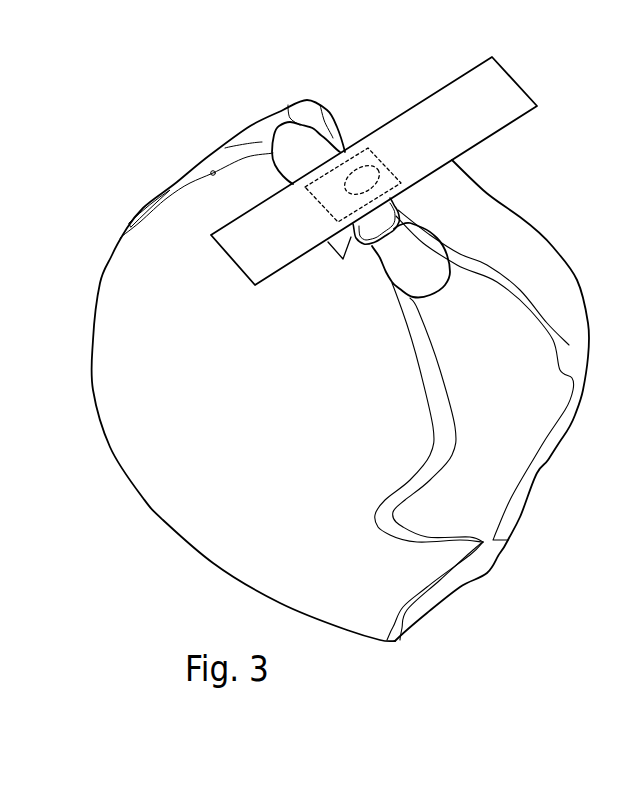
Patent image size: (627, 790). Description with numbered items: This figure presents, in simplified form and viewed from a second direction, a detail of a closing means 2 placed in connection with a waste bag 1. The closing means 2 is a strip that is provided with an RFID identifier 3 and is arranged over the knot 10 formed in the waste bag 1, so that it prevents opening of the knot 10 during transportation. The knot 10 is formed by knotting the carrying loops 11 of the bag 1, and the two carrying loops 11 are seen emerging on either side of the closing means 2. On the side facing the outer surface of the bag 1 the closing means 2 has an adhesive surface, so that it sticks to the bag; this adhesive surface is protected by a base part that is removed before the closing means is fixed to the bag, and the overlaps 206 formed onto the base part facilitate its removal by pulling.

The waste bag 1 is at (133, 270).
The closing means 2 is at (468, 91).
The RFID identifier 3 is at (365, 168).
The knot 10 is at (400, 208).
The carrying loops 11 is at (298, 140).
The overlaps 206 is at (437, 180).